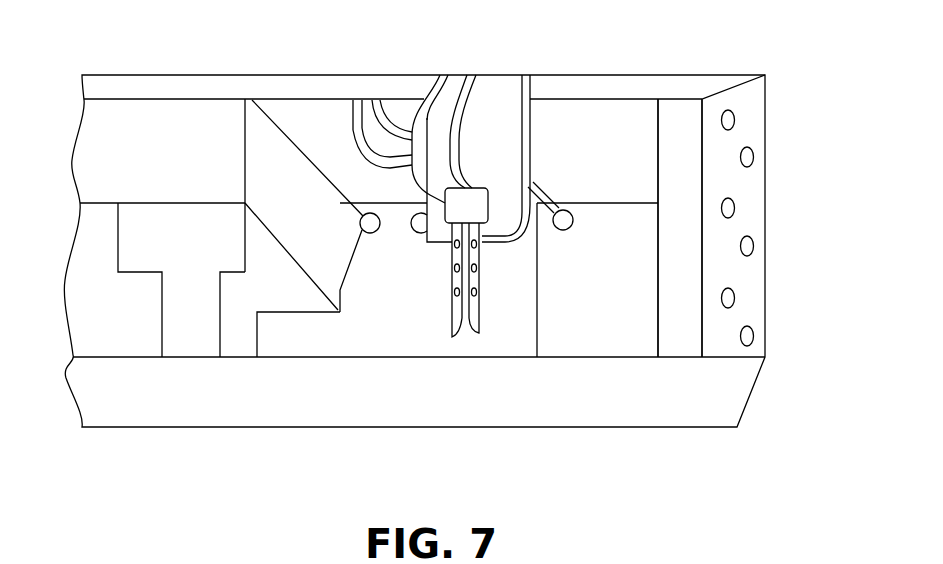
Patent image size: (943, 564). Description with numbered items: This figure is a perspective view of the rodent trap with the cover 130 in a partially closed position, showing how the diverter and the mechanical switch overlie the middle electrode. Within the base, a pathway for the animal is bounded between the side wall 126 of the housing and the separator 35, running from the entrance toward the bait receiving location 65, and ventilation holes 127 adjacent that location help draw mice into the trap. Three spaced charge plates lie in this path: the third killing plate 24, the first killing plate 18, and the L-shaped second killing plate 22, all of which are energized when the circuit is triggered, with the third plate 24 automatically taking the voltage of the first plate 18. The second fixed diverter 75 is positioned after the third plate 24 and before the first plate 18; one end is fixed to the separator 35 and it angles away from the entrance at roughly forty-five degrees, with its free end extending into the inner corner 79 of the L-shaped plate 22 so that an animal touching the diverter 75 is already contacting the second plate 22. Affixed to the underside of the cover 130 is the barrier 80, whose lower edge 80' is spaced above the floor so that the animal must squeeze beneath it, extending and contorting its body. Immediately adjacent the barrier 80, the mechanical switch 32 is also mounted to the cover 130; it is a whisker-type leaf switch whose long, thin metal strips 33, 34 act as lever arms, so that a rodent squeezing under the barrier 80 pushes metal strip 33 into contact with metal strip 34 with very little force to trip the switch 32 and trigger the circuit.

The cover 130 is at (588, 84).
The side wall 126 is at (297, 411).
The separator 35 is at (158, 164).
The third killing plate 24 is at (193, 256).
The second fixed barrier or diverter member 75 is at (313, 222).
The inner corner 79 is at (340, 313).
The second killing plate 22 is at (398, 341).
The barrier 80 is at (463, 158).
The lower edge of the barrier 80' is at (440, 243).
The metal strip 33 is at (453, 317).
The mechanical switch 32 is at (490, 335).
The metal strip 34 is at (475, 256).
The first killing plate 18 is at (616, 316).
The bait receiving location 65 is at (694, 233).
The ventilation holes 127 is at (752, 157).